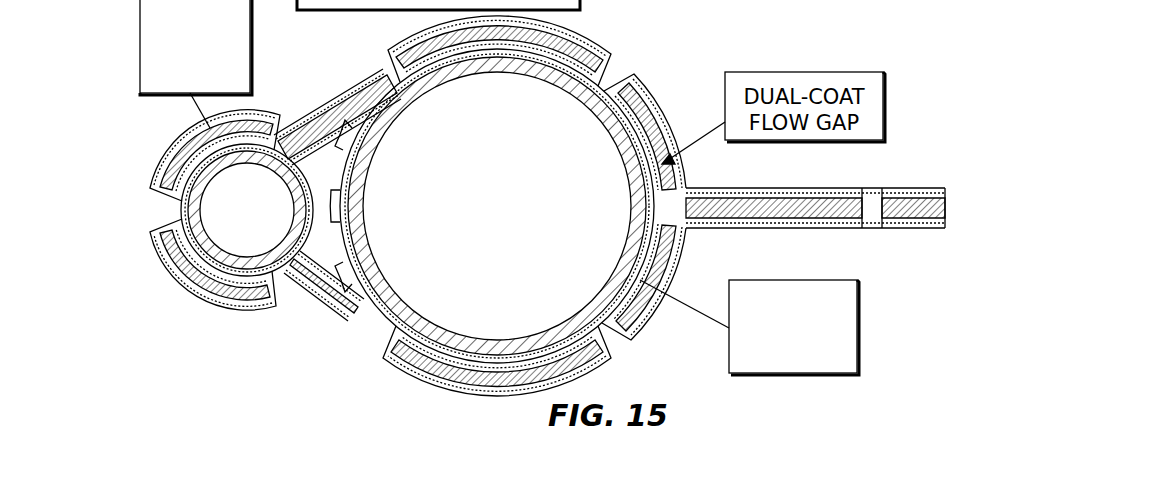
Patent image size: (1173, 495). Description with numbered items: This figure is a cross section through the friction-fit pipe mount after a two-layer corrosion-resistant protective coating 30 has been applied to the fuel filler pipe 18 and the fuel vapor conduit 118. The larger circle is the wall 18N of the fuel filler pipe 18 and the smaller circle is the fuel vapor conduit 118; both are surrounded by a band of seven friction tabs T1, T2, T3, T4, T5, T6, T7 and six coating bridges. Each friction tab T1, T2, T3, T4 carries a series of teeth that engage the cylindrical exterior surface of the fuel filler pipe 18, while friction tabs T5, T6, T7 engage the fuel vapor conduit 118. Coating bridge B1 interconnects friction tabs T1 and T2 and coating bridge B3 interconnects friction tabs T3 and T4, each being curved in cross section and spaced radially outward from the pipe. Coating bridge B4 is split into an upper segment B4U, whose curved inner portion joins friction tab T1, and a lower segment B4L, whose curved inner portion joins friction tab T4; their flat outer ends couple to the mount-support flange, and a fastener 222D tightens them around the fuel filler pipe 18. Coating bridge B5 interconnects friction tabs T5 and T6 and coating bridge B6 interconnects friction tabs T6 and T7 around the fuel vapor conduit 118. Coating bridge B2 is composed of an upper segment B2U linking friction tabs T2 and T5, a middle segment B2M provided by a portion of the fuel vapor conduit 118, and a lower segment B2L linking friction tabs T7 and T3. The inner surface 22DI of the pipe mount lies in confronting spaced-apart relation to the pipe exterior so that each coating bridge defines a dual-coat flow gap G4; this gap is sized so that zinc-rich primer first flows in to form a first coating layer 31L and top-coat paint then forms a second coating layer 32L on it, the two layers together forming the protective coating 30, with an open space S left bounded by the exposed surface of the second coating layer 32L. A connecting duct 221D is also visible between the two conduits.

The fuel filler pipe 18 is at (857, 327).
The metal pipe wall 18N is at (457, 340).
The inner surface of friction-fit pipe mount 22DI is at (487, 50).
The multi-layer corrosion-resistant protective coating 30 is at (538, 281).
The first coating layer 31L is at (820, 197).
The second coating layer 32L is at (738, 190).
The fuel vapor conduit 118 is at (140, 42).
The connecting duct 221D is at (334, 113).
The fastener 222D is at (842, 228).
The coating bridge B1 is at (578, 40).
The coating bridge B2 is at (436, 206).
The upper segment B2U is at (363, 162).
The middle segment B2M is at (360, 203).
The lower segment B2L is at (458, 229).
The coating bridge B3 is at (600, 380).
The coating bridge B4 is at (721, 174).
The upper segment B4U is at (663, 110).
The lower segment B4L is at (766, 250).
The coating bridge B5 is at (172, 142).
The coating bridge B6 is at (160, 265).
The dual-coat flow gap G4 is at (323, 172).
The open space S is at (420, 381).
The friction tab T1 is at (597, 104).
The friction tab T2 is at (395, 108).
The friction tab T3 is at (410, 312).
The friction tab T4 is at (602, 325).
The friction tab T5 is at (262, 168).
The friction tab T6 is at (182, 210).
The friction tab T7 is at (257, 266).